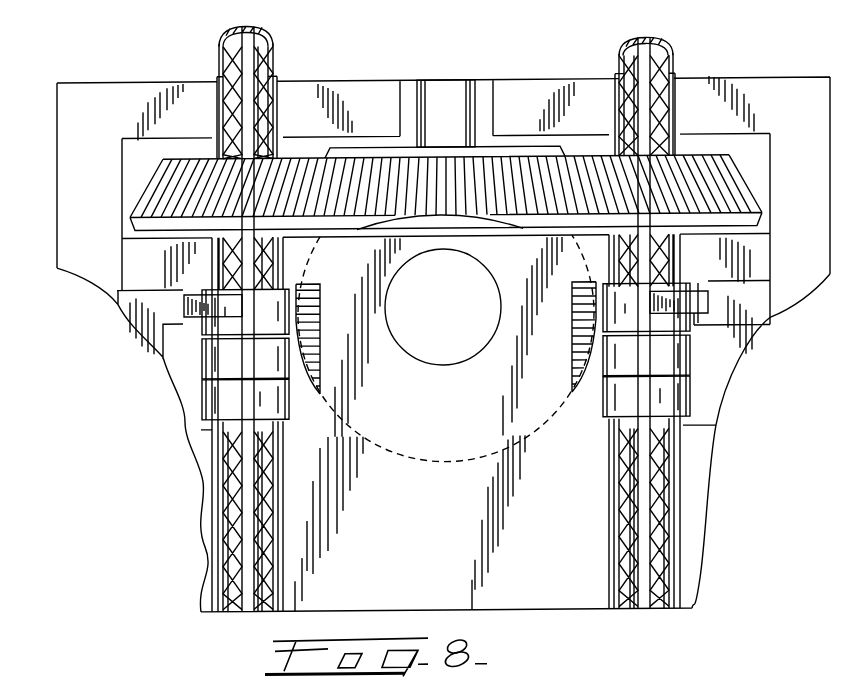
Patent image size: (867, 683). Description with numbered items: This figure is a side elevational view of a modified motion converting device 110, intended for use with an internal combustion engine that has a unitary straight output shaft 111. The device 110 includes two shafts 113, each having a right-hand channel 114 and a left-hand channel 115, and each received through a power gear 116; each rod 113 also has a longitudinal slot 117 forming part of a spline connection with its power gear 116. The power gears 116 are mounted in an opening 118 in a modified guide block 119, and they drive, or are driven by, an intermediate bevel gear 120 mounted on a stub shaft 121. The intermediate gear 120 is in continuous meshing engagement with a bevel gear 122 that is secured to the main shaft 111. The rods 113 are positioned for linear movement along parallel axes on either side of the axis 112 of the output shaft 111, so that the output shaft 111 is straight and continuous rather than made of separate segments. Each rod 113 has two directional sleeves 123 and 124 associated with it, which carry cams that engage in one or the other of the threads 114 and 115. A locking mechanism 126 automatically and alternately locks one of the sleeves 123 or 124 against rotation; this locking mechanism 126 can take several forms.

The motion converting device 110 is at (500, 70).
The output shaft 111 is at (472, 360).
The axis 112 is at (437, 325).
The shaft 113 is at (262, 54).
The right-hand channel 114 is at (258, 92).
The left-hand channel 115 is at (218, 88).
The power gear 116 is at (153, 197).
The longitudinal slot 117 is at (247, 148).
The opening 118 is at (124, 140).
The guide block 119 is at (82, 232).
The intermediate bevel gear 120 is at (370, 167).
The stub shaft 121 is at (443, 103).
The bevel gear 122 is at (580, 340).
The directional sleeve 123 is at (207, 325).
The directional sleeve 124 is at (220, 397).
The locking mechanism 126 is at (178, 354).